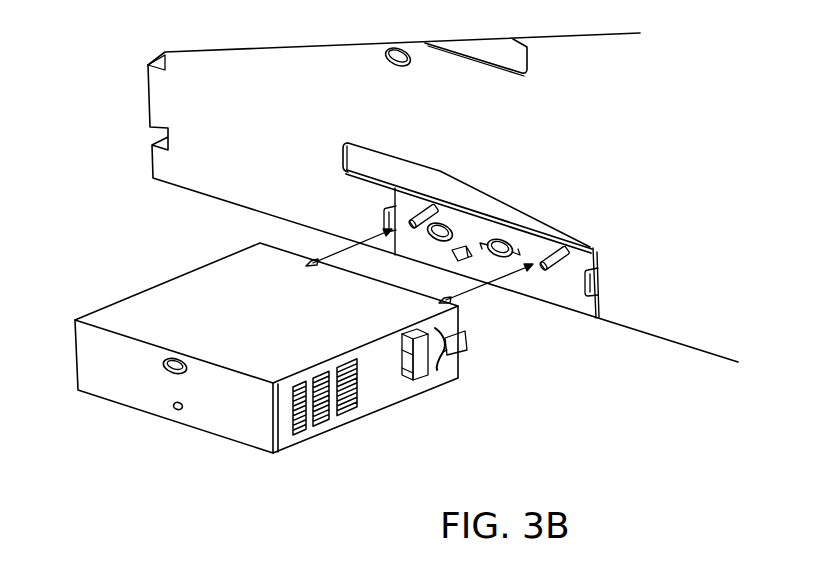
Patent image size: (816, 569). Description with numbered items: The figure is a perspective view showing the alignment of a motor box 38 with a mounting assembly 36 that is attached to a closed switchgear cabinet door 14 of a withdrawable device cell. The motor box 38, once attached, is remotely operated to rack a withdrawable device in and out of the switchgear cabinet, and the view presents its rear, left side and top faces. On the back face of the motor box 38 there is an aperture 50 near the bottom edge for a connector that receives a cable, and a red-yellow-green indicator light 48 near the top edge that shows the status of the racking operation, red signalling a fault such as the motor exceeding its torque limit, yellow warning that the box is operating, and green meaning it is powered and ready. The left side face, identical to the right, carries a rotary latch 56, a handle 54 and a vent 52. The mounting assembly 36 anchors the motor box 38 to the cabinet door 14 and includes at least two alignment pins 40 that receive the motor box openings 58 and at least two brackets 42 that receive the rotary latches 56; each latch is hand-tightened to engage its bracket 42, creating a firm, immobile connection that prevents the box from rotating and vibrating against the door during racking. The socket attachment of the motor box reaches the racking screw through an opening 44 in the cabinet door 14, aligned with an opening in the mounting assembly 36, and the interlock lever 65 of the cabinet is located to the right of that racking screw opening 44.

The switchgear cabinet door 14 is at (516, 39).
The mounting assembly 36 is at (535, 287).
The motor box 38 is at (260, 295).
The alignment pins 40 is at (417, 207).
The brackets 42 is at (385, 208).
The racking screw opening 44 is at (443, 226).
The indicator light 48 is at (162, 358).
The aperture 50 is at (182, 411).
The vent 52 is at (330, 370).
The handle 54 is at (407, 388).
The rotary latch 56 is at (437, 375).
The motor box openings 58 is at (313, 262).
The interlock lever 65 is at (500, 242).